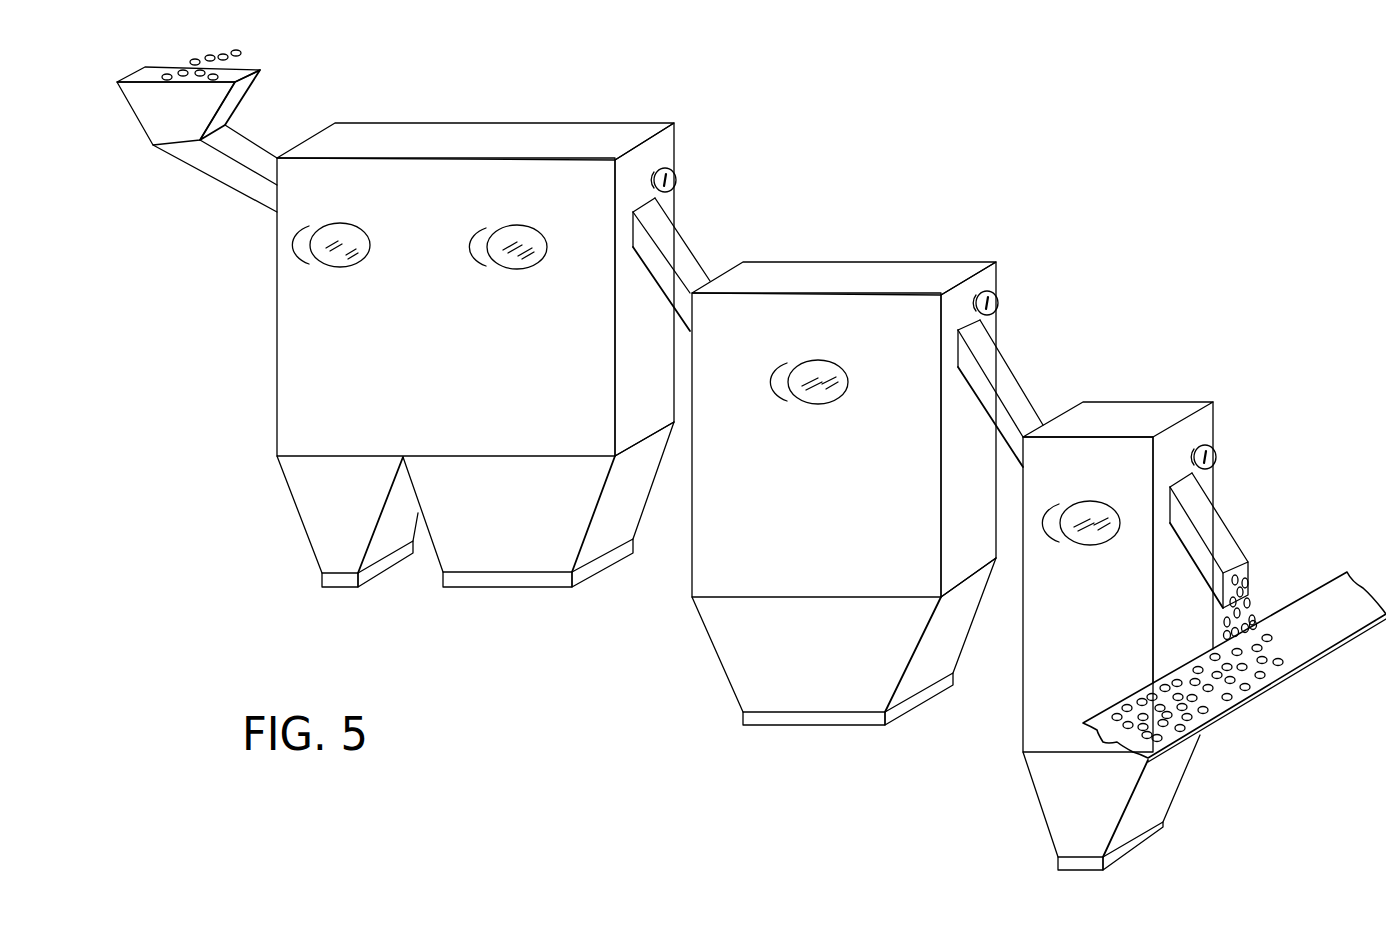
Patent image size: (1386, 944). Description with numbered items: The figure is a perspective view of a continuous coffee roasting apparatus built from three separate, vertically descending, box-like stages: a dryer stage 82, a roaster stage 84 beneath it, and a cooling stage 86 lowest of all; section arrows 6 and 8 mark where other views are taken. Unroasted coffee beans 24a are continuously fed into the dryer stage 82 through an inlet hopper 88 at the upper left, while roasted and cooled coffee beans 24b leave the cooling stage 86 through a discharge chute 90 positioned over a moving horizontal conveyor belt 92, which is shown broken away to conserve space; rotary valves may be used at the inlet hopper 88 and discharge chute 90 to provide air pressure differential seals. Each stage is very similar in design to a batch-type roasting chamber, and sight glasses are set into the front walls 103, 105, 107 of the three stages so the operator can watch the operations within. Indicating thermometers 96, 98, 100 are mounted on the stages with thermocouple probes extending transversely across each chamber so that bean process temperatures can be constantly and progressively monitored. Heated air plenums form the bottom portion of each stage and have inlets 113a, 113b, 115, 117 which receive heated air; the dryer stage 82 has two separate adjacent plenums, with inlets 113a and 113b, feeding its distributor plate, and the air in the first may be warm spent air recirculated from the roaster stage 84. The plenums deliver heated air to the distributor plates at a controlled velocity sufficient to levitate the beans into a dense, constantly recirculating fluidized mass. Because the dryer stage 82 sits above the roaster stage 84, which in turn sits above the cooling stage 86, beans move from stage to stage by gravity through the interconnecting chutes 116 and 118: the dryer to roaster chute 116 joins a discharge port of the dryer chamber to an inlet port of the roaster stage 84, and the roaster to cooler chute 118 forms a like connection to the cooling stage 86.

The section line 6- 6 is at (137, 282).
The section line 8- 8 is at (877, 252).
The unroasted coffee beans 24a is at (229, 63).
The roasted and cooled coffee beans 24b is at (1260, 618).
The dryer stage 82 is at (265, 538).
The roaster stage 84 is at (680, 663).
The cooling stage 86 is at (992, 762).
The inlet hopper 88 is at (185, 125).
The discharge chute 90 is at (1237, 533).
The conveyor belt 92 is at (1358, 622).
The indicating thermometer 96 is at (677, 180).
The indicating thermometer 98 is at (998, 309).
The indicating thermometer 100 is at (1217, 460).
The front wall 103 is at (443, 331).
The front wall 105 is at (790, 467).
The front wall 107 is at (1068, 591).
The inlet 113a is at (342, 587).
The inlet 113b is at (512, 587).
The inlet 115 is at (812, 725).
The dryer to roaster chute 116 is at (685, 247).
The inlet 117 is at (1088, 868).
The roaster to cooler chute 118 is at (1012, 387).